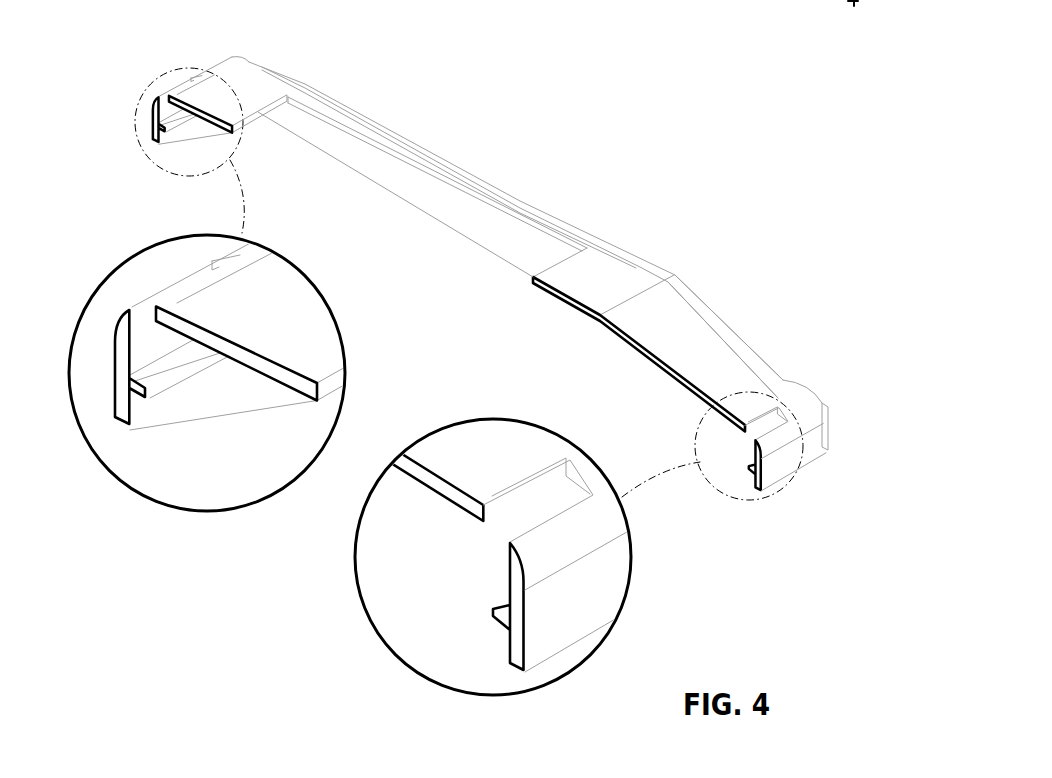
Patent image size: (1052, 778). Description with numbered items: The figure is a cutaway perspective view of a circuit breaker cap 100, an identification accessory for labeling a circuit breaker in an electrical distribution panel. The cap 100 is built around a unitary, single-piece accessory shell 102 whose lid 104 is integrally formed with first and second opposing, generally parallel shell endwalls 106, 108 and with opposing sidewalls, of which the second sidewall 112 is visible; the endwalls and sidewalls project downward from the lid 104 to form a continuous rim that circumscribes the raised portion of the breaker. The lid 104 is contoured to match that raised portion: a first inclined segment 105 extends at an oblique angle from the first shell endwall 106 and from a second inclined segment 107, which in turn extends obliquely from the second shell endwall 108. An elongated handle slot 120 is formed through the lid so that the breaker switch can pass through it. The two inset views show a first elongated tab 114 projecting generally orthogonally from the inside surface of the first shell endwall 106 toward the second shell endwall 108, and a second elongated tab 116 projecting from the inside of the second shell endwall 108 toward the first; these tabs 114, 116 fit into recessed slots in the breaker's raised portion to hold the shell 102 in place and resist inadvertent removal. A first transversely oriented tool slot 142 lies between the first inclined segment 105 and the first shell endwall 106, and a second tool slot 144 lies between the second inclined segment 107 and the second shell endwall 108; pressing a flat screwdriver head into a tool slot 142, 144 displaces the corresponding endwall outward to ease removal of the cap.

The circuit breaker cap 100 is at (707, 137).
The accessory shell 102 is at (603, 228).
The lid 104 is at (290, 290).
The first inclined segment 105 is at (703, 337).
The first shell endwall 106 is at (810, 452).
The second inclined segment 107 is at (262, 89).
The second shell endwall 108 is at (115, 352).
The second sidewall 112 is at (453, 213).
The first elongated tab 114 is at (503, 602).
The second elongated tab 116 is at (153, 382).
The handle slot 120 is at (507, 208).
The first tool slot 142 is at (770, 424).
The second tool slot 144 is at (163, 100).